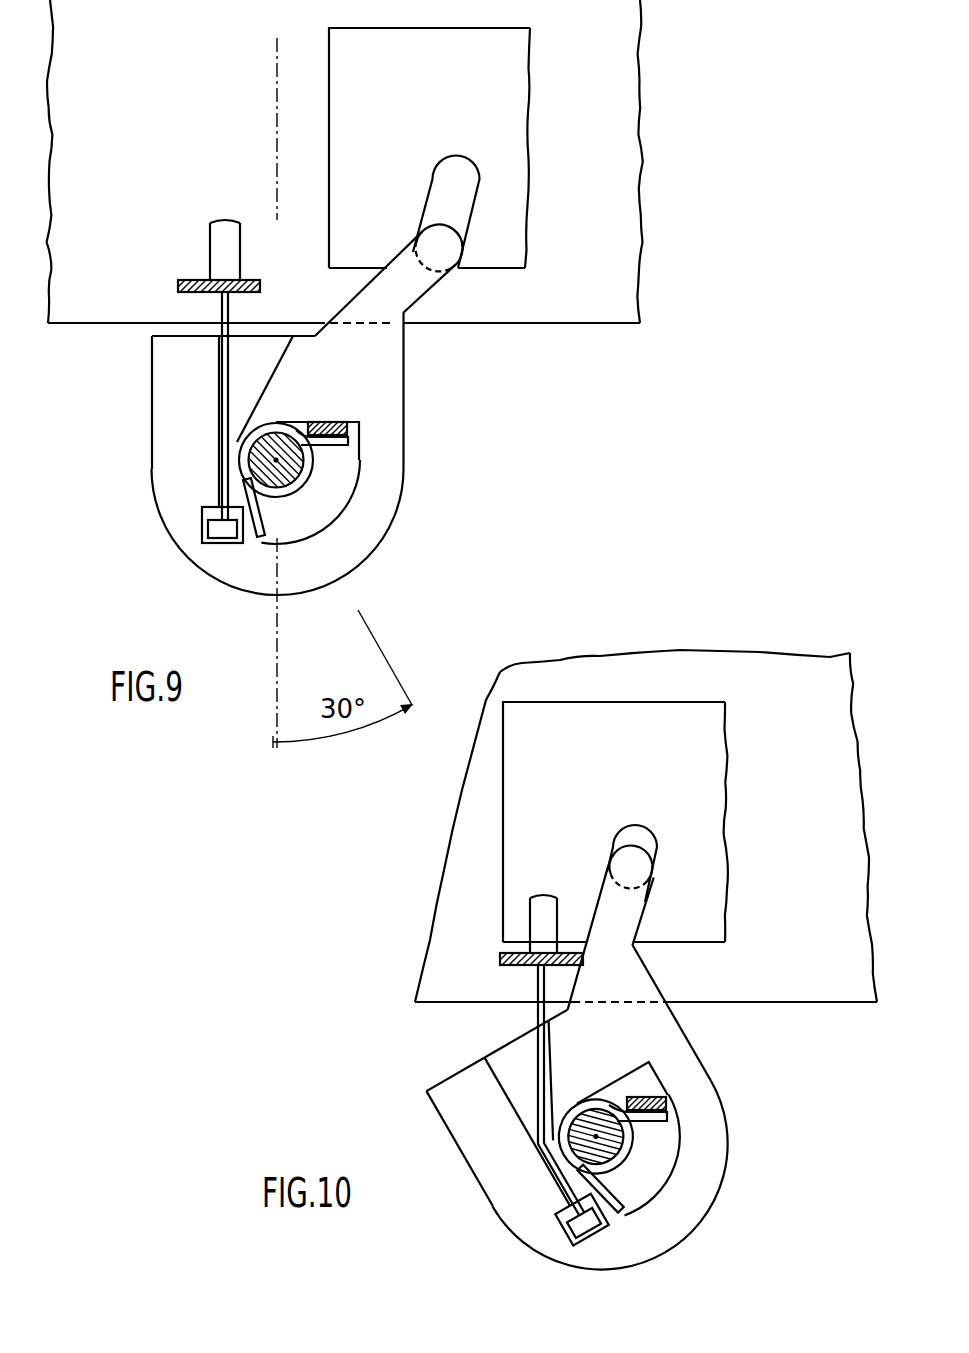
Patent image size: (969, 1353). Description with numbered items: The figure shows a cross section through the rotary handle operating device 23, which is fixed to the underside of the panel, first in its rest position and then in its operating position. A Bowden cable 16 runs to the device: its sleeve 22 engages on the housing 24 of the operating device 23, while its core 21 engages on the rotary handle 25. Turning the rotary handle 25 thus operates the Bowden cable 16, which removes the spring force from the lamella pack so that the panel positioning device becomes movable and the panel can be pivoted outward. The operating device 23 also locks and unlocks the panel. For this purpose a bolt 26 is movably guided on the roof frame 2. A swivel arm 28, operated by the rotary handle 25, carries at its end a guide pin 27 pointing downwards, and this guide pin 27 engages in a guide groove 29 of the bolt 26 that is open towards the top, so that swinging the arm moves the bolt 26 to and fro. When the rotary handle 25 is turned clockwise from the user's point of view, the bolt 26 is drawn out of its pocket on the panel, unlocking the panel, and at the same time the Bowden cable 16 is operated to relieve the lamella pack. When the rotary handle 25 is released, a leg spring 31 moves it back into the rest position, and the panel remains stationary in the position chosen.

In FIG. 9, the roof frame 2 is at (622, 259).
In FIG. 10, the roof frame 2 is at (832, 796).
In FIG. 9, the Bowden cable 16 is at (221, 339).
In FIG. 9, the core 21 is at (230, 305).
In FIG. 10, the core 21 is at (561, 1090).
In FIG. 9, the sleeve 22 is at (232, 248).
In FIG. 10, the sleeve 22 is at (543, 924).
In FIG. 9, the rotary handle operating device 23 is at (158, 510).
In FIG. 10, the rotary handle operating device 23 is at (700, 1063).
In FIG. 9, the housing 24 is at (190, 285).
In FIG. 10, the housing 24 is at (500, 958).
In FIG. 9, the rotary handle 25 is at (150, 426).
In FIG. 10, the rotary handle 25 is at (474, 1178).
In FIG. 9, the bolt 26 is at (515, 95).
In FIG. 10, the bolt 26 is at (705, 748).
In FIG. 9, the guide pin 27 is at (432, 275).
In FIG. 10, the guide pin 27 is at (628, 882).
In FIG. 9, the swivel arm 28 is at (410, 292).
In FIG. 10, the swivel arm 28 is at (630, 920).
In FIG. 9, the guide groove 29 is at (466, 191).
In FIG. 10, the guide groove 29 is at (643, 841).
In FIG. 9, the leg spring 31 is at (265, 514).
In FIG. 10, the leg spring 31 is at (615, 1197).